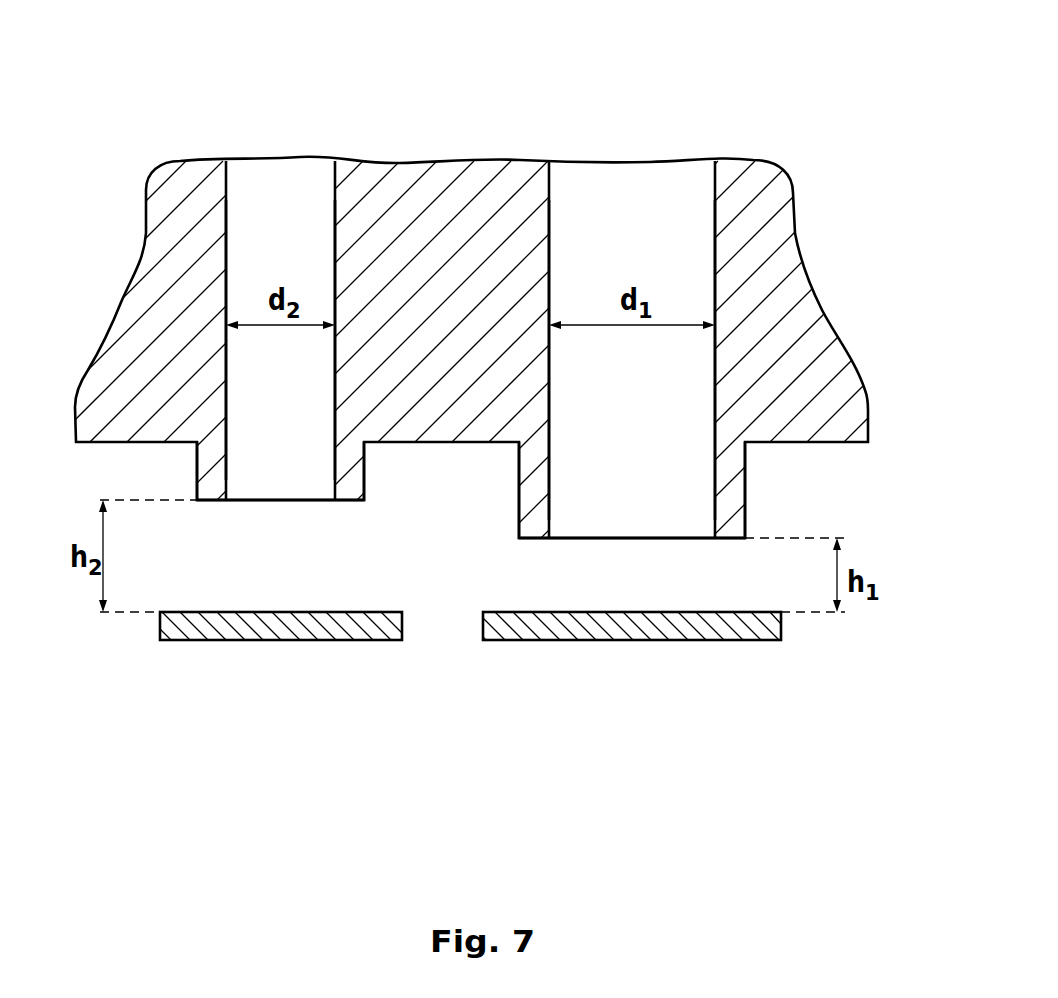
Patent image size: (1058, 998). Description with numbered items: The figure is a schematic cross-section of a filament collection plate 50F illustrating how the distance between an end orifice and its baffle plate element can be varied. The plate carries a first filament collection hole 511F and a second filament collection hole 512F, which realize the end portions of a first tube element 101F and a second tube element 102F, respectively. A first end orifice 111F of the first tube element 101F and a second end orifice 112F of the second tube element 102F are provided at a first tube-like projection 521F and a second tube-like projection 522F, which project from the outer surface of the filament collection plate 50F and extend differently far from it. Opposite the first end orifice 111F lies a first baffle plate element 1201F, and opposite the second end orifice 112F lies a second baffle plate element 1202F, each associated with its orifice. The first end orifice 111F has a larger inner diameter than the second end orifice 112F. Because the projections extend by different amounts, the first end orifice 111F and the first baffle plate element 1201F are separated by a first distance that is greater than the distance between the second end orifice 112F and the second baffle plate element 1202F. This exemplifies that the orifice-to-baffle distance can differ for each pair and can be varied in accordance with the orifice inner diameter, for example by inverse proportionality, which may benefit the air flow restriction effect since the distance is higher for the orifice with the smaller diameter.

The filament collection plate 50F is at (778, 308).
The first tube element 101F is at (626, 122).
The second tube element 102F is at (274, 122).
The first filament collection hole 511F is at (653, 187).
The second filament collection hole 512F is at (303, 187).
The first tube-like projection 521F is at (732, 493).
The second tube-like projection 522F is at (352, 478).
The first end orifice 111F is at (660, 556).
The second end orifice 112F is at (309, 517).
The first baffle plate element 1201F is at (628, 627).
The second baffle plate element 1202F is at (277, 627).